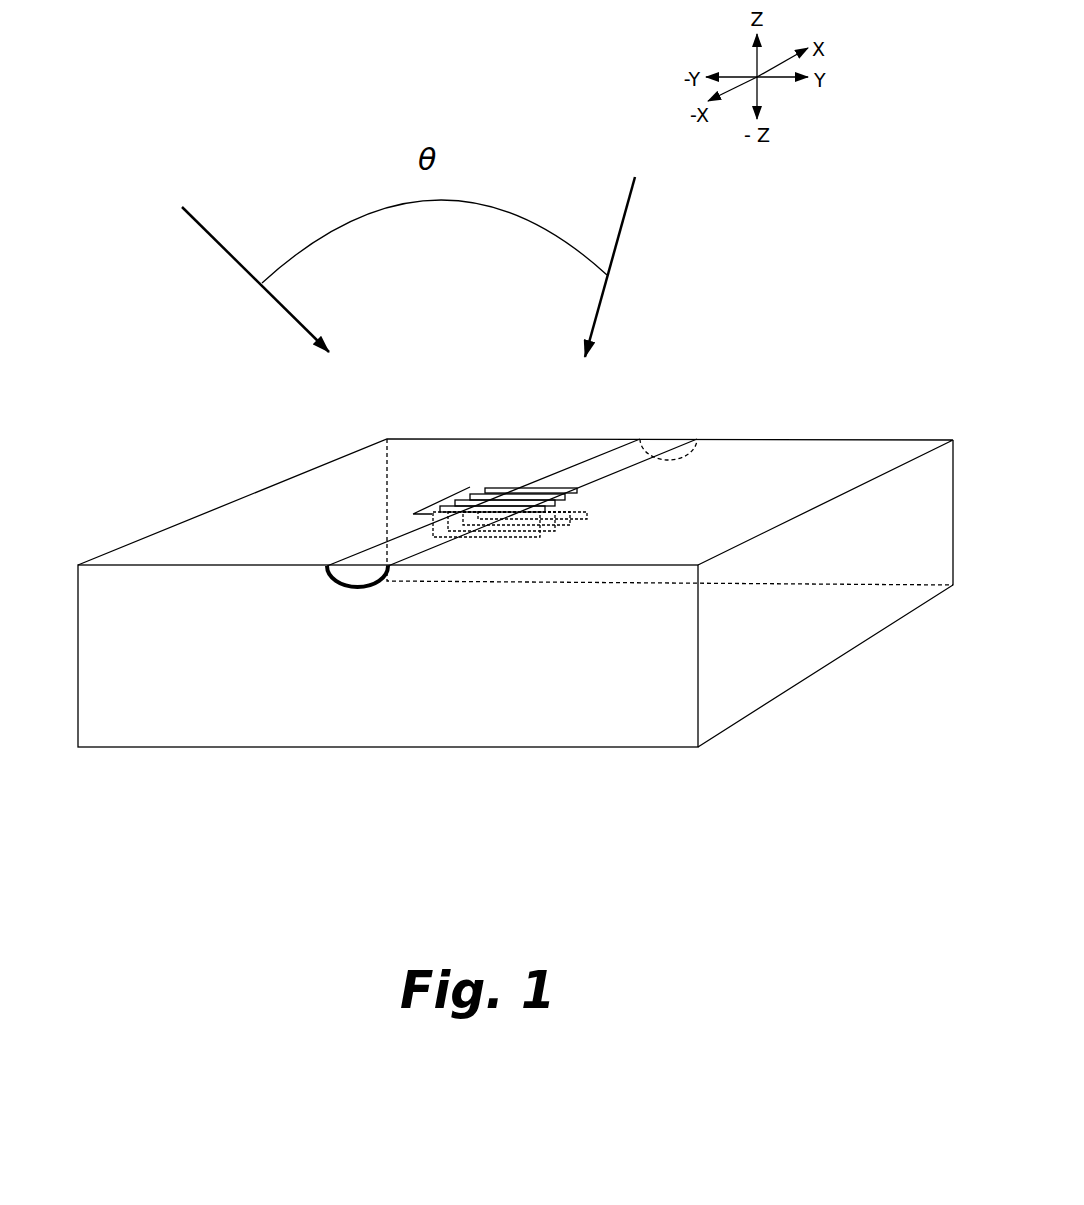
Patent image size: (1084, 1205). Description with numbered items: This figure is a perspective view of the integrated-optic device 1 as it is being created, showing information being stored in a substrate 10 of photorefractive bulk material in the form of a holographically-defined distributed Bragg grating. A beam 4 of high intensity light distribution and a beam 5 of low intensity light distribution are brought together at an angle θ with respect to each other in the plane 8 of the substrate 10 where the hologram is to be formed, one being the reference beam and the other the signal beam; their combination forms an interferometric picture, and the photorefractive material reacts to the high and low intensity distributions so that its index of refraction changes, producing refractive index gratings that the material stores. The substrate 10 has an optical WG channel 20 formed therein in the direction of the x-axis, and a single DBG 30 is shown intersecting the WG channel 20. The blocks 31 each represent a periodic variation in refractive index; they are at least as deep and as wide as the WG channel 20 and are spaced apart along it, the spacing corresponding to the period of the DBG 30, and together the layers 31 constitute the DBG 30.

The integrated-optic device 1 is at (809, 266).
The beam of high intensity light distribution 4 is at (215, 238).
The beam of low intensity light distribution 5 is at (622, 215).
The plane of the material 8 is at (263, 533).
The substrate 10 is at (813, 462).
The WG channel 20 is at (371, 553).
The DBG 30 is at (450, 495).
The blocks 31 is at (497, 487).